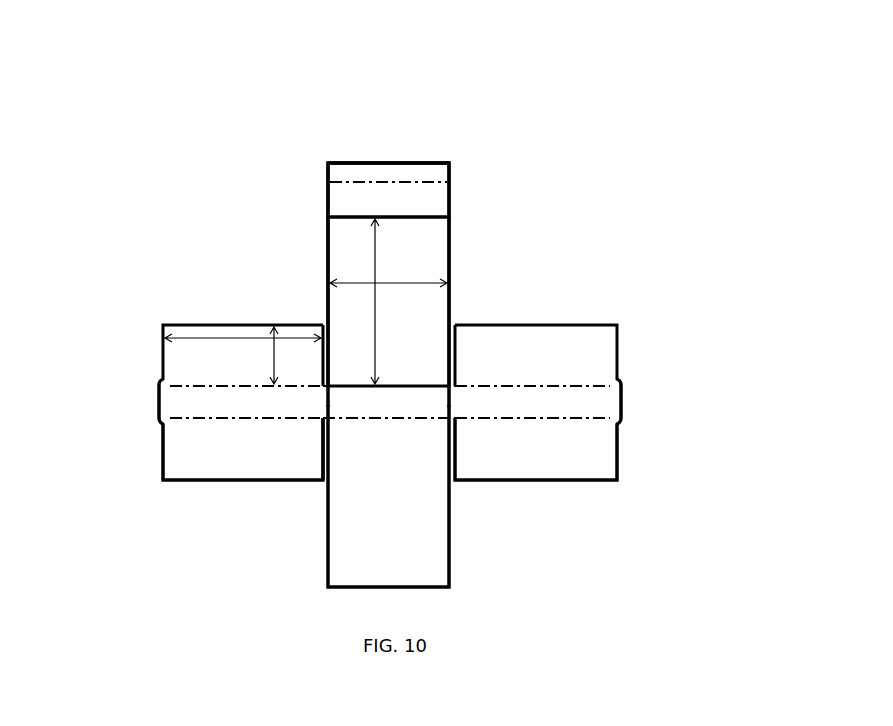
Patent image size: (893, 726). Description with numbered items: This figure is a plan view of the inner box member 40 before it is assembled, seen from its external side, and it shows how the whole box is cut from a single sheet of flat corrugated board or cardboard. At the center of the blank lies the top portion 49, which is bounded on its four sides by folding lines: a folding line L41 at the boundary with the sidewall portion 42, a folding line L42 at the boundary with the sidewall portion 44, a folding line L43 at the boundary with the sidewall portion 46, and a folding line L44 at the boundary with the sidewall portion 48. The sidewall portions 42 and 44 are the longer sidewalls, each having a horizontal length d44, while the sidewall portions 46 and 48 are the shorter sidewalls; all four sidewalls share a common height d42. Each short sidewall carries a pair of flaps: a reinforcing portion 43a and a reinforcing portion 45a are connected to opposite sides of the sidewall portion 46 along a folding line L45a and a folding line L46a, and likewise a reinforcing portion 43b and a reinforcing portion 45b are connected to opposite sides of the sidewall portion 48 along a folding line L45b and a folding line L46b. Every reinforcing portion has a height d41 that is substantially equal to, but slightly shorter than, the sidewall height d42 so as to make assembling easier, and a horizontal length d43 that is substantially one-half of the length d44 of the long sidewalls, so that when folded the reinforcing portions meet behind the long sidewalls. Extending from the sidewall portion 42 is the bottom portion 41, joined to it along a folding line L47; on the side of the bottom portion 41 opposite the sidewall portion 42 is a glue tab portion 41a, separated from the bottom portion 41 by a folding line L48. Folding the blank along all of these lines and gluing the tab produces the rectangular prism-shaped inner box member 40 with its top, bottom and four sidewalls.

The inner box member 40 is at (466, 88).
The bottom portion 41 is at (437, 198).
The glue tab portion 41a is at (450, 165).
The sidewall portion 42 is at (437, 250).
The sidewall portion 44 is at (405, 530).
The reinforcing portion 43a is at (166, 357).
The reinforcing portion 43b is at (607, 358).
The reinforcing portion 45a is at (172, 452).
The reinforcing portion 45b is at (607, 452).
The sidewall portion 46 is at (170, 402).
The sidewall portion 48 is at (612, 402).
The top portion 49 is at (362, 400).
The folding line L41 is at (432, 383).
The folding line L42 is at (318, 460).
The folding line L43 is at (326, 404).
The folding line L44 is at (455, 398).
The folding line L45a is at (205, 378).
The folding line L45b is at (583, 380).
The folding line L46a is at (190, 420).
The folding line L46b is at (583, 420).
The folding line L47 is at (357, 215).
The folding line L48 is at (411, 182).
The height of reinforcing portions d41 is at (243, 347).
The height of sidewall portions d42 is at (390, 301).
The horizontal length of reinforcing portions d43 is at (289, 355).
The horizontal length of sidewall portions d44 is at (388, 274).